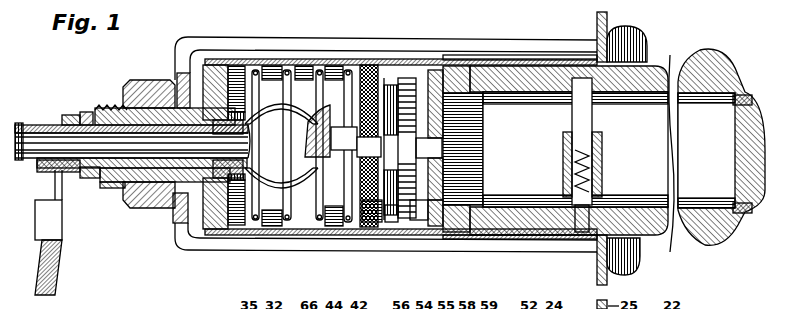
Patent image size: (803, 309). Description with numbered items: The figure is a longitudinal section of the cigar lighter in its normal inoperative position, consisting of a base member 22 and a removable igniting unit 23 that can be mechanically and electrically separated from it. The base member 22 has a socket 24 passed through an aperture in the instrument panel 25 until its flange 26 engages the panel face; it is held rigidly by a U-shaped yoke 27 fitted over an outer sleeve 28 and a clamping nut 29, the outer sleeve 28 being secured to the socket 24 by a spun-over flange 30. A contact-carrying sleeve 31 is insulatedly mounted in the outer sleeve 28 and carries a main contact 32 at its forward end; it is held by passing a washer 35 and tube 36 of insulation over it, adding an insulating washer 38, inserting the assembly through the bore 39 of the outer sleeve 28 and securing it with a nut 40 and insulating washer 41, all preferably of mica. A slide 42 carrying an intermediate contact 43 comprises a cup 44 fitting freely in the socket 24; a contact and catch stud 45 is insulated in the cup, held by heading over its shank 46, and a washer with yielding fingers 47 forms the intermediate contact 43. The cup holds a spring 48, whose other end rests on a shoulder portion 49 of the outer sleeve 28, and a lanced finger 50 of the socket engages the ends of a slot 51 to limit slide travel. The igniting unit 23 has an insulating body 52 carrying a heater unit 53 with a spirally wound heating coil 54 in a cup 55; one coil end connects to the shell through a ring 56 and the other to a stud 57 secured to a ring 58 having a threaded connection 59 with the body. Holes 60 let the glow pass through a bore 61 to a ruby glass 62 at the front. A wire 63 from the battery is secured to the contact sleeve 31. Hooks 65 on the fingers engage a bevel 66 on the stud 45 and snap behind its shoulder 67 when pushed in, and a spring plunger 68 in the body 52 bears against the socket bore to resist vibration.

The base member 22 is at (640, 35).
The removable igniting unit 23 is at (733, 58).
The socket 24 is at (576, 62).
The instrument panel 25 is at (608, 18).
The flange 26 is at (626, 262).
The U-shaped yoke 27 is at (242, 251).
The outer sleeve 28 is at (105, 108).
The clamping nut 29 is at (140, 88).
The spun-over flange 30 is at (185, 64).
The contact-carrying sleeve 31 is at (23, 124).
The main contact 32 is at (278, 100).
The washer 35 is at (240, 122).
The tube of insulation 36 is at (98, 184).
The insulating washer 38 is at (208, 224).
The bore 39 is at (115, 188).
The nut 40 is at (73, 115).
The insulating washer 41 is at (86, 112).
The slide 42 is at (372, 223).
The intermediate contact 43 is at (393, 221).
The cup 44 is at (346, 118).
The contact and catch stud 45 is at (344, 138).
The shank 46 is at (369, 147).
The yielding fingers 47 is at (418, 216).
The spring 48 is at (285, 222).
The shoulder portion 49 is at (231, 208).
The lanced finger 50 is at (320, 235).
The slot 51 is at (342, 229).
The body 52 is at (533, 72).
The heater unit 53 is at (420, 214).
The heating coil 54 is at (421, 123).
The cup 55 is at (442, 93).
The ring 56 is at (400, 80).
The stud 57 is at (429, 148).
The ring 58 is at (472, 240).
The threaded connection 59 is at (474, 75).
The holes 60 is at (443, 188).
The bore 61 is at (545, 195).
The ruby glass 62 is at (756, 110).
The wire 63 is at (40, 297).
The hooks 65 is at (300, 131).
The bevel 66 is at (313, 77).
The shoulder 67 is at (336, 128).
The spring plunger 68 is at (580, 222).